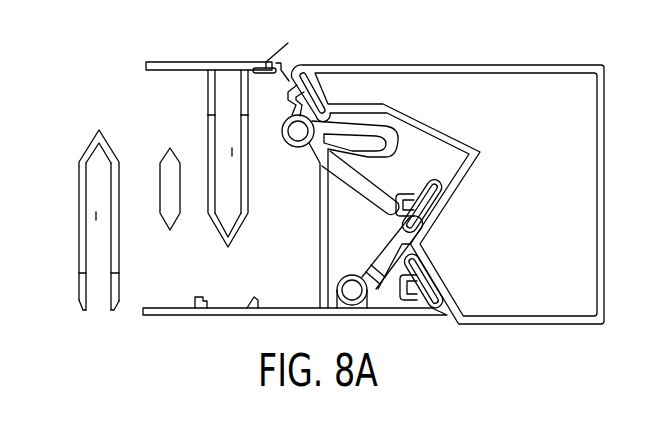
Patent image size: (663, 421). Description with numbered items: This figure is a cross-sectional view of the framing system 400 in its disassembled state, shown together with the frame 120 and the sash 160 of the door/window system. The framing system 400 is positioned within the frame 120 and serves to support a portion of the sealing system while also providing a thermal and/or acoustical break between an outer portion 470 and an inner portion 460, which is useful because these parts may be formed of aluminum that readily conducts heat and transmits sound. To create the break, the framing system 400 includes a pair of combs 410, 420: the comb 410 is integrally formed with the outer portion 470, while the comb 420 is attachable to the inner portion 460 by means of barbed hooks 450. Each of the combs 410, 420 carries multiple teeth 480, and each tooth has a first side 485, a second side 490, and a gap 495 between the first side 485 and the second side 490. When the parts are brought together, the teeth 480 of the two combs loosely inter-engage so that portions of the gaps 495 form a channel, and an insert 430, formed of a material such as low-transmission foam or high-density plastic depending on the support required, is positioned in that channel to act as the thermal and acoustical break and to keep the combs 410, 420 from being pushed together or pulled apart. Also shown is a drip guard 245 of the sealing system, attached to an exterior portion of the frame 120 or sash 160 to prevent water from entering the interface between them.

The framing system 400 is at (98, 81).
The outer portion 470 is at (178, 62).
The teeth 480 is at (90, 147).
The comb 410 is at (207, 117).
The first side 485 is at (208, 145).
The second side 490 is at (122, 172).
The gap 495 is at (95, 216).
The comb 420 is at (118, 278).
The insert 430 is at (173, 231).
The frame 120 is at (168, 316).
The inner portion 460 is at (227, 316).
The barbed hooks 450 is at (207, 297).
The sash 160 is at (517, 65).
The drip guard 245 is at (278, 45).